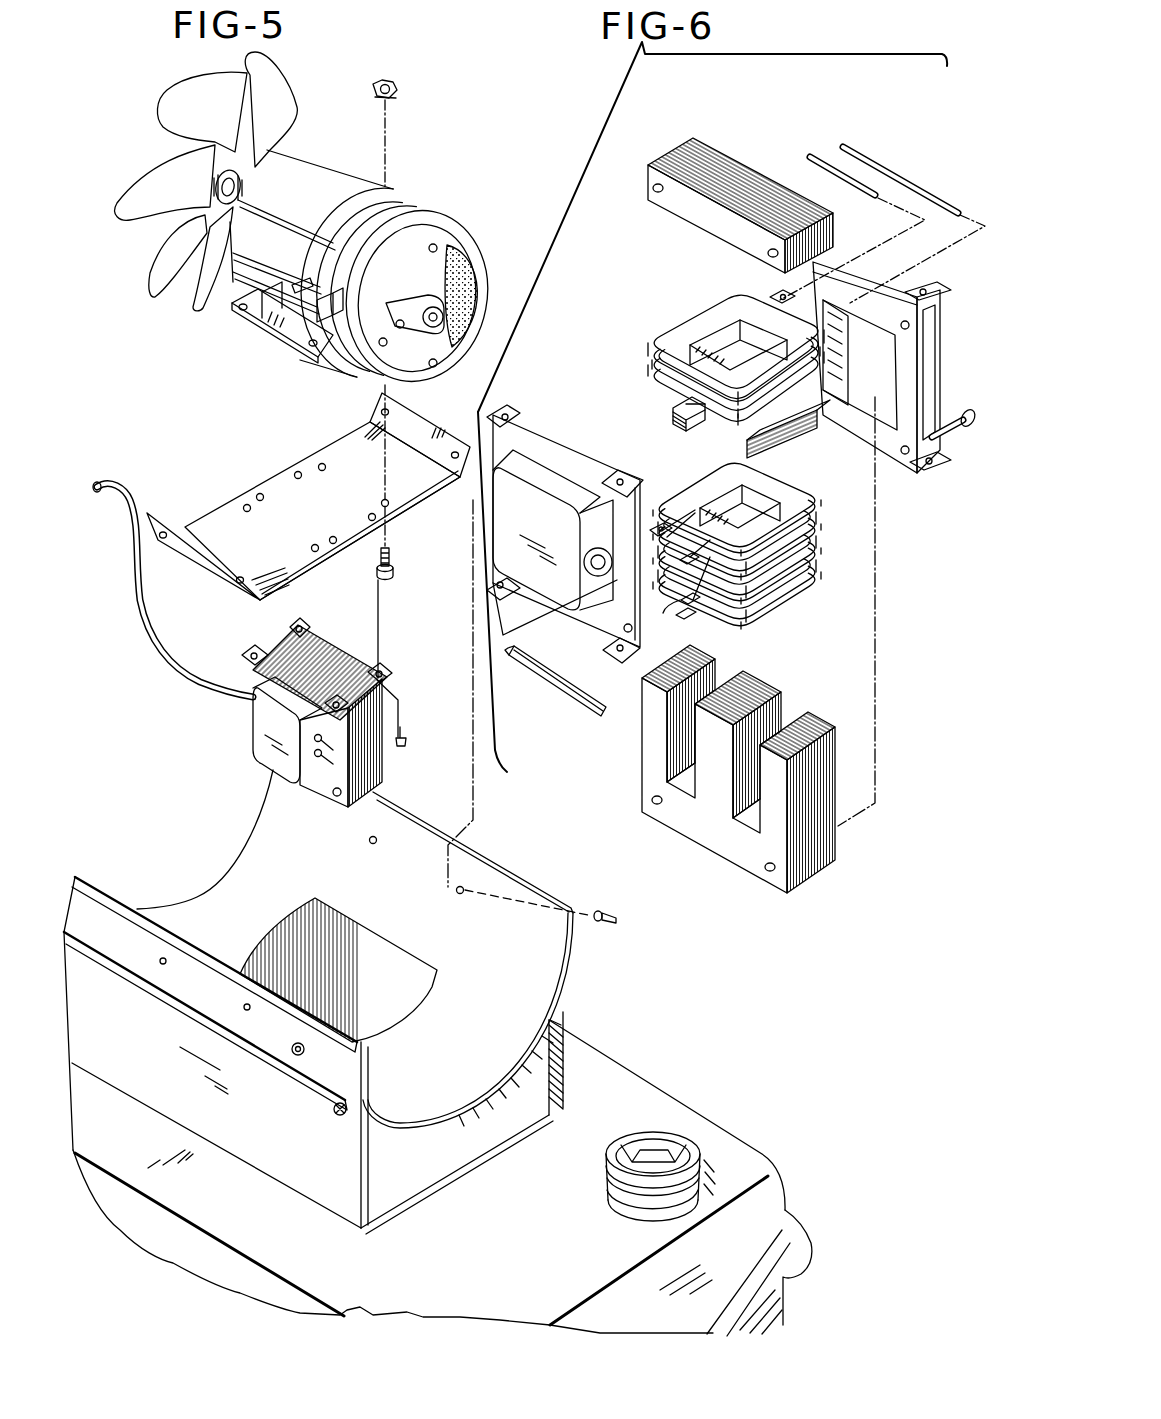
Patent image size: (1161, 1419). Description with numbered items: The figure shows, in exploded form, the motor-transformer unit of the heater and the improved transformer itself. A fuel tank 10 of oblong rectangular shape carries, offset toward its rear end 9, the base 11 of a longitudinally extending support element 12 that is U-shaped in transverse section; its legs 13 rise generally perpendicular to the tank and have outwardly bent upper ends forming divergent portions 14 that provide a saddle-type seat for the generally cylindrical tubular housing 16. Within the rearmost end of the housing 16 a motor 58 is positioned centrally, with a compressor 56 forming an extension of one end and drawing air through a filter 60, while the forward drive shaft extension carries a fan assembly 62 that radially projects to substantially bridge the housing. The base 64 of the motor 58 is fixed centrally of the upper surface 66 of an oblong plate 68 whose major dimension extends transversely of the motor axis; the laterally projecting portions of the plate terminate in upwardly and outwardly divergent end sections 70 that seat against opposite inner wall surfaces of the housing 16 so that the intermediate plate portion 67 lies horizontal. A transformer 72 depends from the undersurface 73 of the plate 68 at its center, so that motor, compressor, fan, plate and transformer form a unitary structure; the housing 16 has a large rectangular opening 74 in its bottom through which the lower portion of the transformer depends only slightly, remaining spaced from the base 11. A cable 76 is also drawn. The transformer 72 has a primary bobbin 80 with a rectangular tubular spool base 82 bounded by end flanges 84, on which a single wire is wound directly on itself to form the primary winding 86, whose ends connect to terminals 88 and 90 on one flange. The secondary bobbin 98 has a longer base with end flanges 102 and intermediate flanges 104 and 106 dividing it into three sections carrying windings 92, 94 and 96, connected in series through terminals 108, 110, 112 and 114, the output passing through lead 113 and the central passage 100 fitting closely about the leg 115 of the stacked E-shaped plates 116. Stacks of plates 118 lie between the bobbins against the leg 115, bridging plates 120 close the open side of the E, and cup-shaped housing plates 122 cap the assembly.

In FIG. 5, the rear end 9 is at (773, 1207).
In FIG. 5, the fuel tank 10 is at (462, 1240).
In FIG. 5, the base 11 is at (490, 1140).
In FIG. 5, the support element 12 is at (270, 1139).
In FIG. 5, the legs 13 is at (371, 1166).
In FIG. 5, the divergent portions 14 is at (181, 1007).
In FIG. 5, the housing 16 is at (505, 974).
In FIG. 5, the compressor 56 is at (435, 215).
In FIG. 5, the motor 58 is at (333, 163).
In FIG. 5, the filter 60 is at (482, 262).
In FIG. 5, the fan assembly 62 is at (178, 102).
In FIG. 5, the base 64 is at (265, 337).
In FIG. 5, the upper surface 66 is at (287, 497).
In FIG. 5, the plate portion 67 is at (337, 553).
In FIG. 5, the plate 68 is at (308, 500).
In FIG. 5, the end sections 70 is at (432, 433).
In FIG. 5, the transformer 72 is at (246, 737).
In FIG. 5, the undersurface 73 is at (413, 510).
In FIG. 5, the opening 74 is at (381, 950).
In FIG. 5, the cable 76 is at (142, 627).
In FIG. 6, the bobbin 80 is at (704, 366).
In FIG. 6, the spool base 82 is at (715, 340).
In FIG. 6, the flange 84 is at (668, 333).
In FIG. 6, the primary winding 86 is at (723, 400).
In FIG. 6, the terminal 88 is at (780, 296).
In FIG. 6, the terminal 90 is at (820, 318).
In FIG. 6, the winding 92 is at (818, 572).
In FIG. 6, the winding 94 is at (823, 546).
In FIG. 6, the winding 96 is at (821, 524).
In FIG. 6, the bobbin 98 is at (758, 548).
In FIG. 6, the central passage 100 is at (780, 488).
In FIG. 6, the flange 102 is at (725, 472).
In FIG. 6, the flange 104 is at (763, 587).
In FIG. 6, the flange 106 is at (773, 563).
In FIG. 6, the terminal 108 is at (683, 617).
In FIG. 6, the terminal 110 is at (668, 608).
In FIG. 6, the terminal 112 is at (697, 566).
In FIG. 6, the lead 113 is at (570, 703).
In FIG. 6, the terminal 114 is at (684, 512).
In FIG. 6, the leg 115 is at (703, 730).
In FIG. 6, the E-shaped plates 116 is at (719, 769).
In FIG. 6, the plates 118 is at (673, 407).
In FIG. 6, the plates 120 is at (695, 217).
In FIG. 6, the housing plates 122 is at (905, 285).